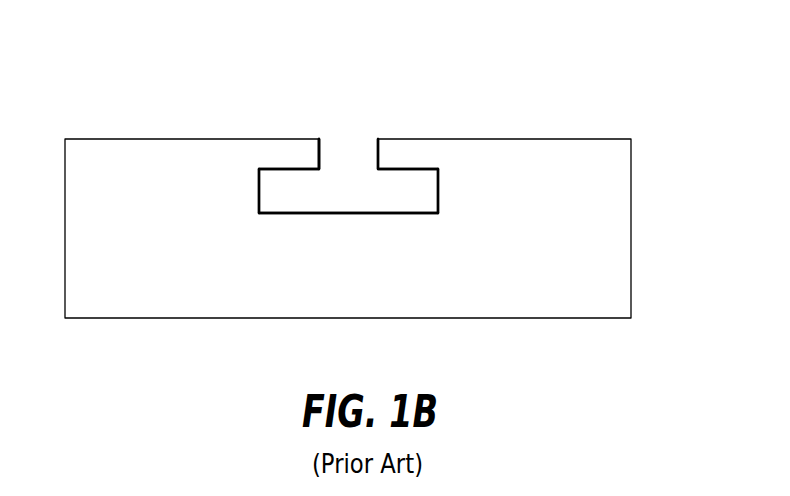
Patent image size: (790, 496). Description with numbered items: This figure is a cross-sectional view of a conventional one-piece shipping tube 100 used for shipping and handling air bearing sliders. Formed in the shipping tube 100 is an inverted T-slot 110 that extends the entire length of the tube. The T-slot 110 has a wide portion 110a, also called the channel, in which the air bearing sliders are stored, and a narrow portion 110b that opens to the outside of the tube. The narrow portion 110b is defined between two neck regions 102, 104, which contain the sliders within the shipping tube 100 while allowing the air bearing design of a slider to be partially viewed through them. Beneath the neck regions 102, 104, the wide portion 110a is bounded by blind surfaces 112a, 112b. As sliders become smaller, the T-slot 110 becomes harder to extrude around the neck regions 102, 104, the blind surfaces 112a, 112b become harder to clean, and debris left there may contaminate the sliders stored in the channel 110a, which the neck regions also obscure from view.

The shipping tube 100 is at (631, 173).
The neck region 102 is at (295, 156).
The neck region 104 is at (402, 155).
The T-slot 110 is at (350, 211).
The wide portion 110a is at (395, 214).
The narrow portion 110b is at (321, 155).
The blind surface 112a is at (286, 173).
The blind surface 112b is at (410, 174).